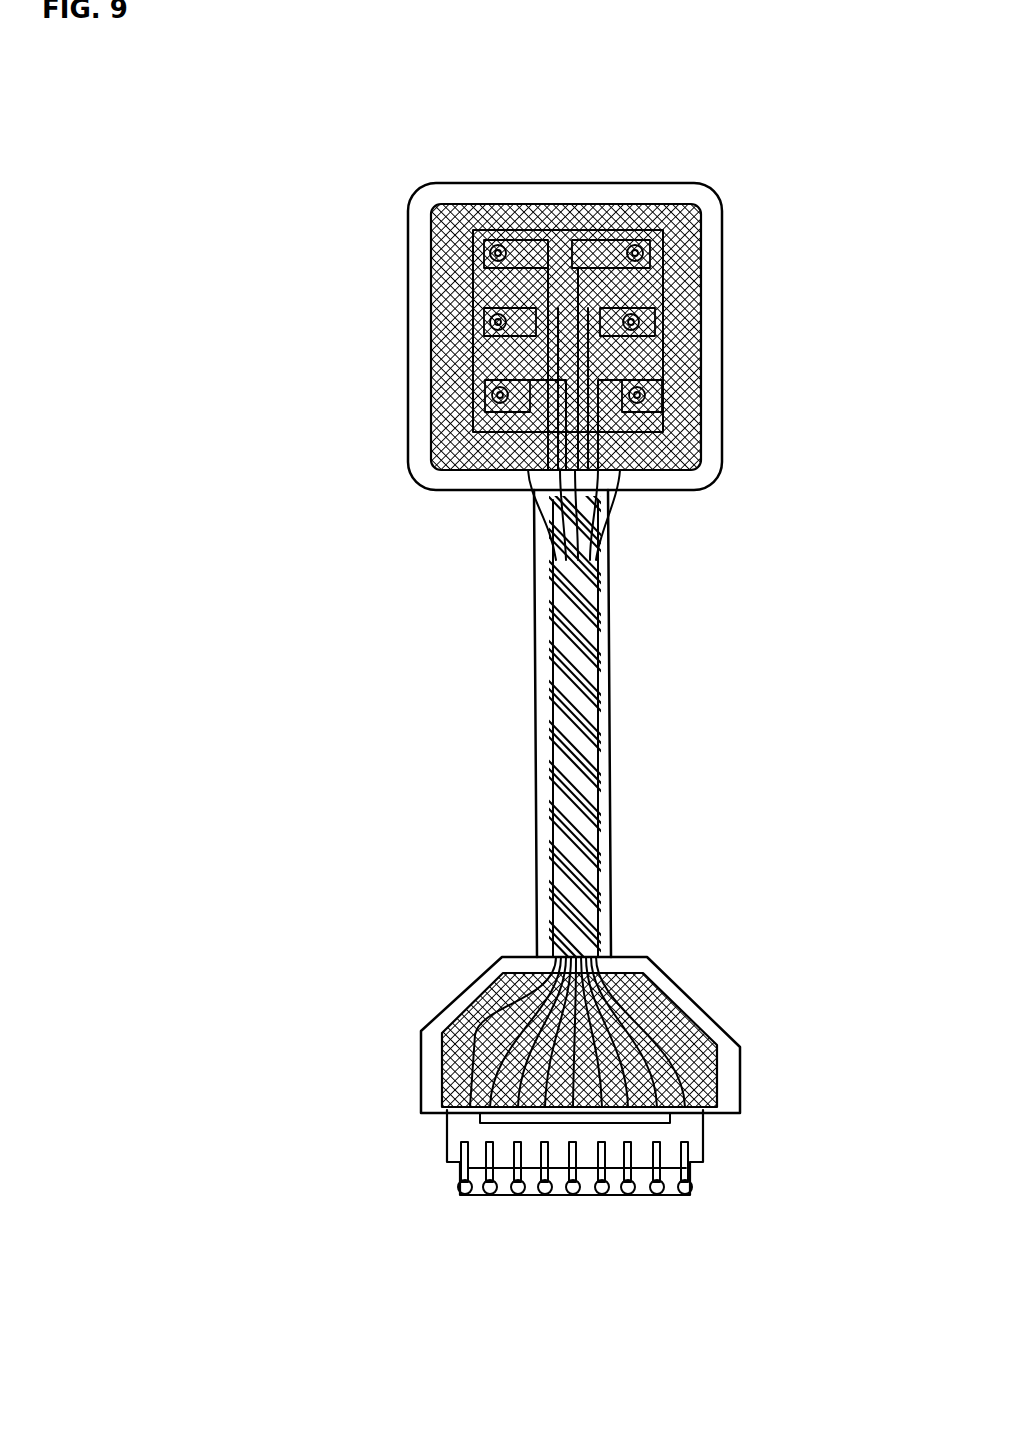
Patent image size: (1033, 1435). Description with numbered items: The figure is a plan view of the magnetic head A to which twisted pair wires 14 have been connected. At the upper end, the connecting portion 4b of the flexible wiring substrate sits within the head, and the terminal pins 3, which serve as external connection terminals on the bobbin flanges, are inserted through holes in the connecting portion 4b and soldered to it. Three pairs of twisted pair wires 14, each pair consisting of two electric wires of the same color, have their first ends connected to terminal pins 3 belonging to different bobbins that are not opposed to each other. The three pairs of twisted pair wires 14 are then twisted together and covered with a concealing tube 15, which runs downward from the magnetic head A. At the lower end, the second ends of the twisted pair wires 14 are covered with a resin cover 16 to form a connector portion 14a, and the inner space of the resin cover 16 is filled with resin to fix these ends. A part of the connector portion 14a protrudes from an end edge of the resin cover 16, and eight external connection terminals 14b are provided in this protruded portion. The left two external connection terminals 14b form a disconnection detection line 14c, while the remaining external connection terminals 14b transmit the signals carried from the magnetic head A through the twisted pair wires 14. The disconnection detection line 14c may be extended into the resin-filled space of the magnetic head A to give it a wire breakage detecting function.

The magnetic head A is at (648, 176).
The terminal pins 3 is at (430, 253).
The connecting portion 4b is at (702, 282).
The twisted pair wires 14 is at (592, 643).
The connector portion 14a is at (683, 1000).
The external connection terminals 14b is at (462, 1178).
The disconnection detection line 14c is at (420, 1040).
The concealing tube 15 is at (533, 717).
The resin cover 16 is at (490, 204).